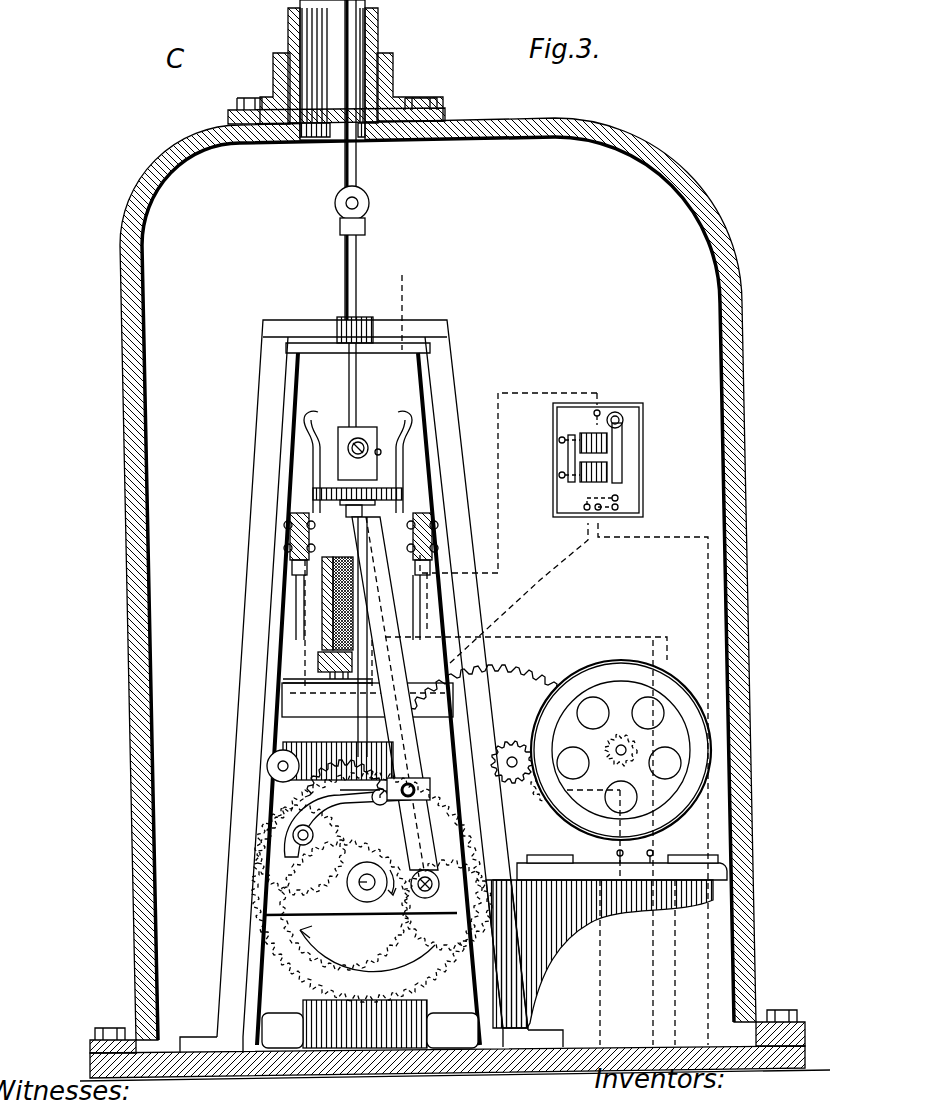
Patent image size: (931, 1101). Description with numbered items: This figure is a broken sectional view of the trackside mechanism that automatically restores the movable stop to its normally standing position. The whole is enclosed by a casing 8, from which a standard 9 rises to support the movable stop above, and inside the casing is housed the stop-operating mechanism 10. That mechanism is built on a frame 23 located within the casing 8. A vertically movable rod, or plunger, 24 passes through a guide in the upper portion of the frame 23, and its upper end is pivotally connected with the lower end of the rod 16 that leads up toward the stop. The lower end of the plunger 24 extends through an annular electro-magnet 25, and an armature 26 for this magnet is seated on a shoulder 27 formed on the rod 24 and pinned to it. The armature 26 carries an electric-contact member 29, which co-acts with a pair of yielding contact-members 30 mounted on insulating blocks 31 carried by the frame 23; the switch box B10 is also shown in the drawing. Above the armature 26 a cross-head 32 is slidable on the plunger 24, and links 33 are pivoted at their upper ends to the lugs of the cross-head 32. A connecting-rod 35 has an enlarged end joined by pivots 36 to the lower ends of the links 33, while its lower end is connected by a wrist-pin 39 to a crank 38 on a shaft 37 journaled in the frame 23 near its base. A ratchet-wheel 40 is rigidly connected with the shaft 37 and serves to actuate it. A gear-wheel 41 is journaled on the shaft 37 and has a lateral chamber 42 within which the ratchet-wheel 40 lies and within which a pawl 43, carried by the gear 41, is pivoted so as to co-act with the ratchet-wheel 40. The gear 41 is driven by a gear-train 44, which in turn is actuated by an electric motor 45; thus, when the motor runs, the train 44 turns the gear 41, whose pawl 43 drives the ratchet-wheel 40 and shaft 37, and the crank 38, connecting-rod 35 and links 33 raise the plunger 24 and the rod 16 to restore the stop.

The casing 8 is at (121, 682).
The standard 9 is at (372, 30).
The mechanism 10 is at (371, 686).
The rod 16 is at (345, 160).
The frame 23 is at (258, 818).
The rod, or plunger 24 is at (345, 290).
The annular electro-magnet 25 is at (360, 633).
The armature 26 is at (312, 493).
The shoulder 27 is at (345, 507).
The electric-contact member 29 is at (380, 505).
The yielding contact-members 30 is at (404, 446).
The insulating blocks 31 is at (428, 535).
The cross-head 32 is at (347, 428).
The links 33 is at (378, 450).
The connecting-rod 35 is at (410, 820).
The pivots 36 is at (415, 786).
The shaft 37 is at (355, 882).
The crank 38 is at (380, 914).
The wrist-pin 39 is at (603, 954).
The ratchet-wheel 40 is at (367, 949).
The gear-wheel 41 is at (367, 881).
The lateral chamber 42 is at (420, 940).
The pawl 43 is at (300, 832).
The gear-train 44 is at (577, 920).
The electric motor 45 is at (668, 680).
The switch box B10 is at (545, 523).